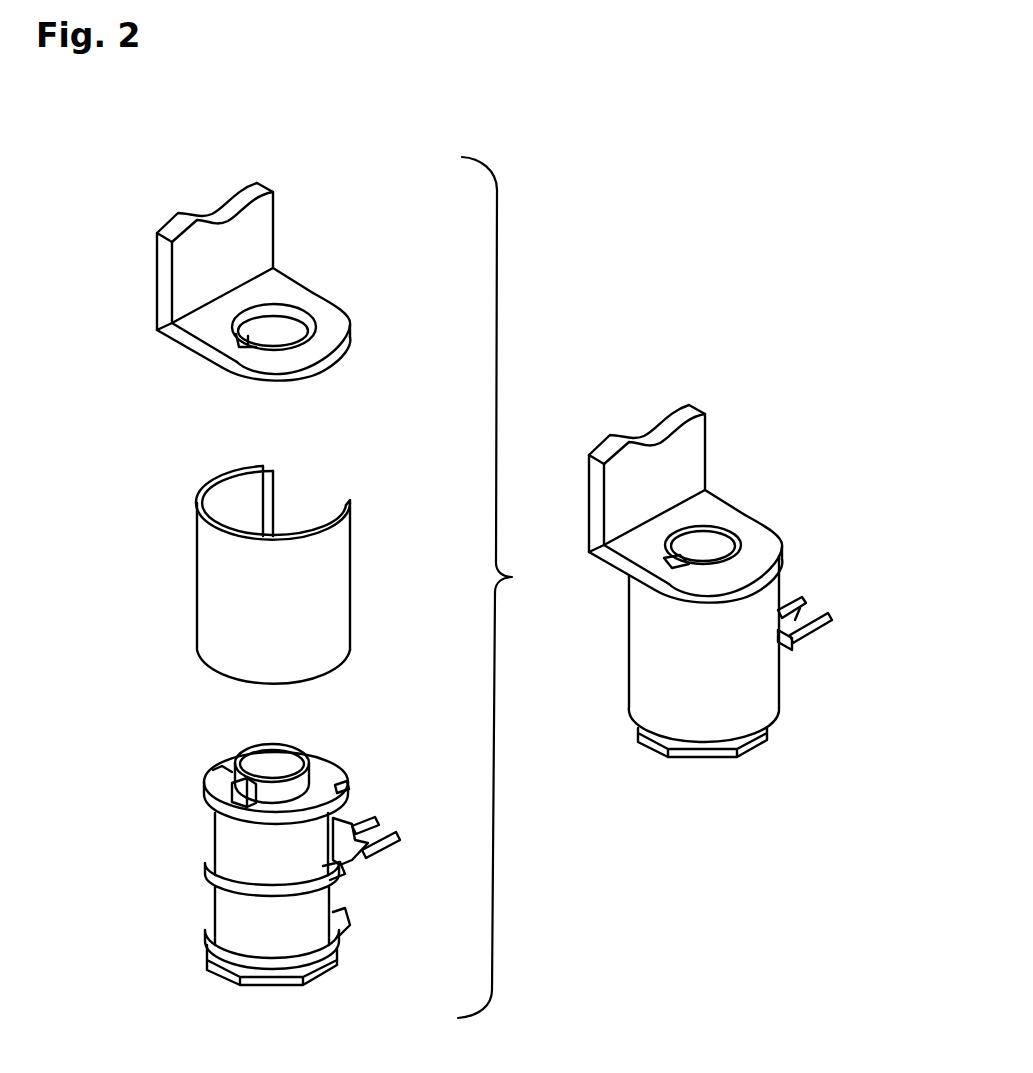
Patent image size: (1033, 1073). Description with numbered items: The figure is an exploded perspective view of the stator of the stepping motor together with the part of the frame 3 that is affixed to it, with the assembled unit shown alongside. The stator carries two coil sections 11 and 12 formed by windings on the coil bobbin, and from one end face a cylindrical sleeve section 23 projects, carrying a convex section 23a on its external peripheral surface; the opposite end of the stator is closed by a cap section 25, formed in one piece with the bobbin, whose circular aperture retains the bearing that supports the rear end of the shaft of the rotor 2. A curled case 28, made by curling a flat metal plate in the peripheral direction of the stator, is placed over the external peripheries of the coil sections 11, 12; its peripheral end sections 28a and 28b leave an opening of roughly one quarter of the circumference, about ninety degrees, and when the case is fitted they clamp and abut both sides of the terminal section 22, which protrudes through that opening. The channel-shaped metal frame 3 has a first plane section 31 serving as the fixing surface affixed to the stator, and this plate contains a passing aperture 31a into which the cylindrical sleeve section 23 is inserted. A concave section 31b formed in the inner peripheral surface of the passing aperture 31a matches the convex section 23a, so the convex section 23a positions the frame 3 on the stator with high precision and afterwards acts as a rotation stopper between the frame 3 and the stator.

The rotor 2 is at (736, 681).
The frame 3 is at (250, 222).
The coil section 11 is at (240, 845).
The coil section 12 is at (240, 910).
The terminal section 22 is at (383, 828).
The cylindrical sleeve section 23 is at (236, 760).
The convex section 23a is at (232, 782).
The cap section 25 is at (224, 980).
The curled case 28 is at (222, 566).
The end section 28a is at (270, 486).
The end section 28b is at (350, 572).
The first plane section 31 is at (210, 320).
The passing aperture 31a is at (293, 312).
The concave section 31b is at (233, 331).